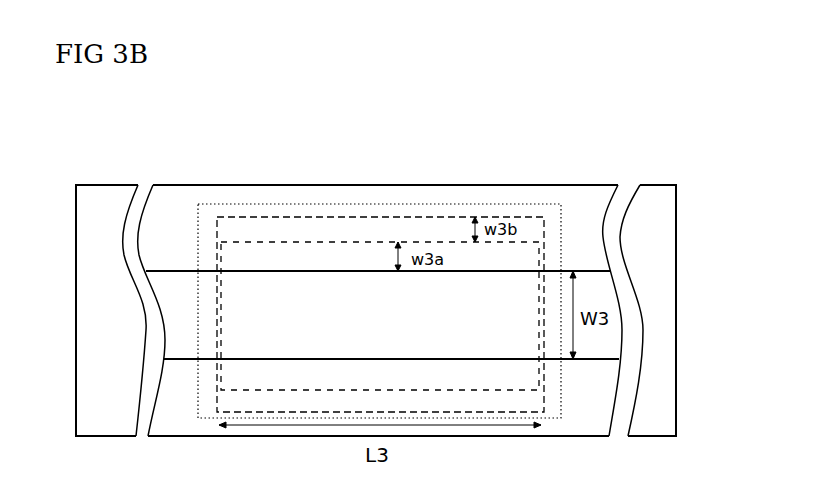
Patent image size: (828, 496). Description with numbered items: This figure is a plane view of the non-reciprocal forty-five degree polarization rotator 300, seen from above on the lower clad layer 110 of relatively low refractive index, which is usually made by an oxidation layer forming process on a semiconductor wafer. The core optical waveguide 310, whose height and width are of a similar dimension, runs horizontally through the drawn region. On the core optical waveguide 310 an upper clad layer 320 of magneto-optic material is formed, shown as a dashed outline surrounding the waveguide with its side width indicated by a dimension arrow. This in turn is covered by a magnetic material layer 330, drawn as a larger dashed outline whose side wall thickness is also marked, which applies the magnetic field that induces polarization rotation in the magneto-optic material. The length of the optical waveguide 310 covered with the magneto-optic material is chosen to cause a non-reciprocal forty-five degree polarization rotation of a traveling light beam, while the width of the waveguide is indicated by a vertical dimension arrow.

The lower clad layer 110 is at (376, 310).
The non-reciprocal 45° polarization rotator 300 is at (367, 204).
The optical waveguide 310 is at (382, 315).
The upper clad layer 320 is at (380, 316).
The magnetic material layer 330 is at (380, 314).